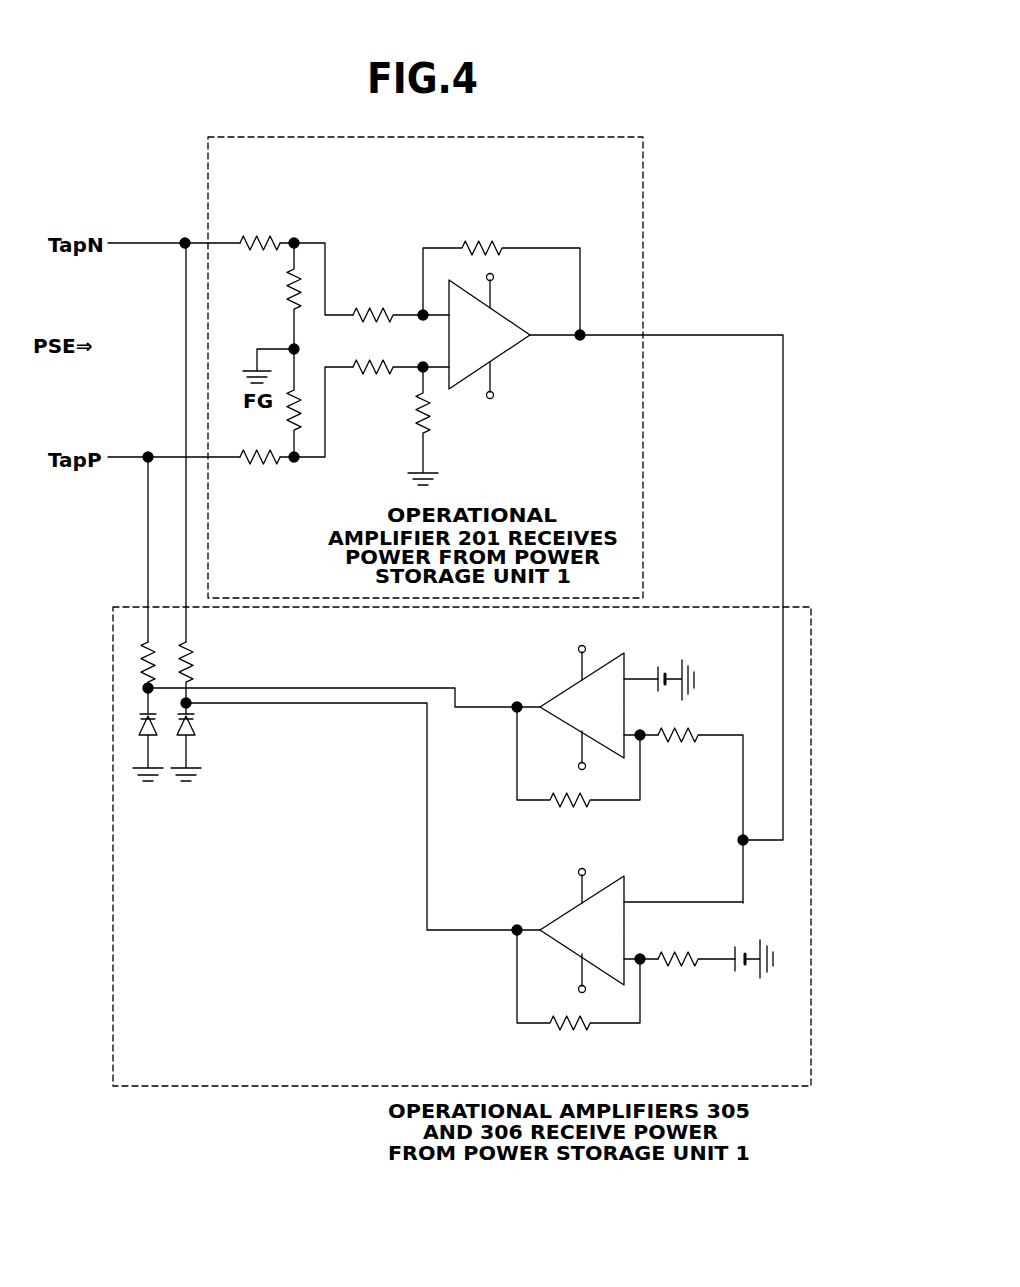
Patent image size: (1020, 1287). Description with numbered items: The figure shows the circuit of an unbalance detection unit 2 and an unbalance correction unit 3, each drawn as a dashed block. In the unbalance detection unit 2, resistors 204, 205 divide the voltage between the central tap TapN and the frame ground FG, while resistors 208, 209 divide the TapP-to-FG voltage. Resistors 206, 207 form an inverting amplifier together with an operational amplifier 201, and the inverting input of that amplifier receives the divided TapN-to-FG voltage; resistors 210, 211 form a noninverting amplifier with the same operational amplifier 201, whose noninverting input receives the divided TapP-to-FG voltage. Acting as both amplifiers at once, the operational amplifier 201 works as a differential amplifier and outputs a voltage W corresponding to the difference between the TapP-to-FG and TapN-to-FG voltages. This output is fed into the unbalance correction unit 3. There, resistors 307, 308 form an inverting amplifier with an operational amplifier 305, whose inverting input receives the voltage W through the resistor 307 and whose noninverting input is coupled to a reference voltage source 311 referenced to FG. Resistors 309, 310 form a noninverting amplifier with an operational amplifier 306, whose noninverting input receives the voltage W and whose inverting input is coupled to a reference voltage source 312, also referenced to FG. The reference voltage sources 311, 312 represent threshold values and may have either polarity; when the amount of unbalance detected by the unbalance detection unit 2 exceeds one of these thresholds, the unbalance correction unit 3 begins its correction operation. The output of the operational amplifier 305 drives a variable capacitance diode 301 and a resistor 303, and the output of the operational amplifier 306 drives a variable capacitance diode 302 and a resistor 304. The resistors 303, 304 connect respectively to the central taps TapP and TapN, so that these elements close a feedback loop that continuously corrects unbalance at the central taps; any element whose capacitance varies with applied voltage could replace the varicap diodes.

The unbalance detection unit 2 is at (560, 137).
The unbalance correction unit 3 is at (718, 607).
The operational amplifier 201 is at (505, 315).
The resistor 204 is at (256, 236).
The resistor 205 is at (287, 296).
The resistor 206 is at (373, 307).
The resistor 207 is at (477, 241).
The resistor 208 is at (263, 468).
The resistor 209 is at (287, 428).
The resistor 210 is at (375, 378).
The resistor 211 is at (432, 425).
The variable capacitance diode 301 is at (138, 729).
The variable capacitance diode 302 is at (196, 727).
The resistor 303 is at (140, 668).
The resistor 304 is at (195, 658).
The operational amplifier 305 is at (562, 689).
The operational amplifier 306 is at (562, 915).
The resistor 307 is at (681, 750).
The resistor 308 is at (572, 808).
The resistor 309 is at (681, 973).
The resistor 310 is at (572, 1035).
The reference voltage source 311 is at (660, 663).
The reference voltage source 312 is at (741, 975).